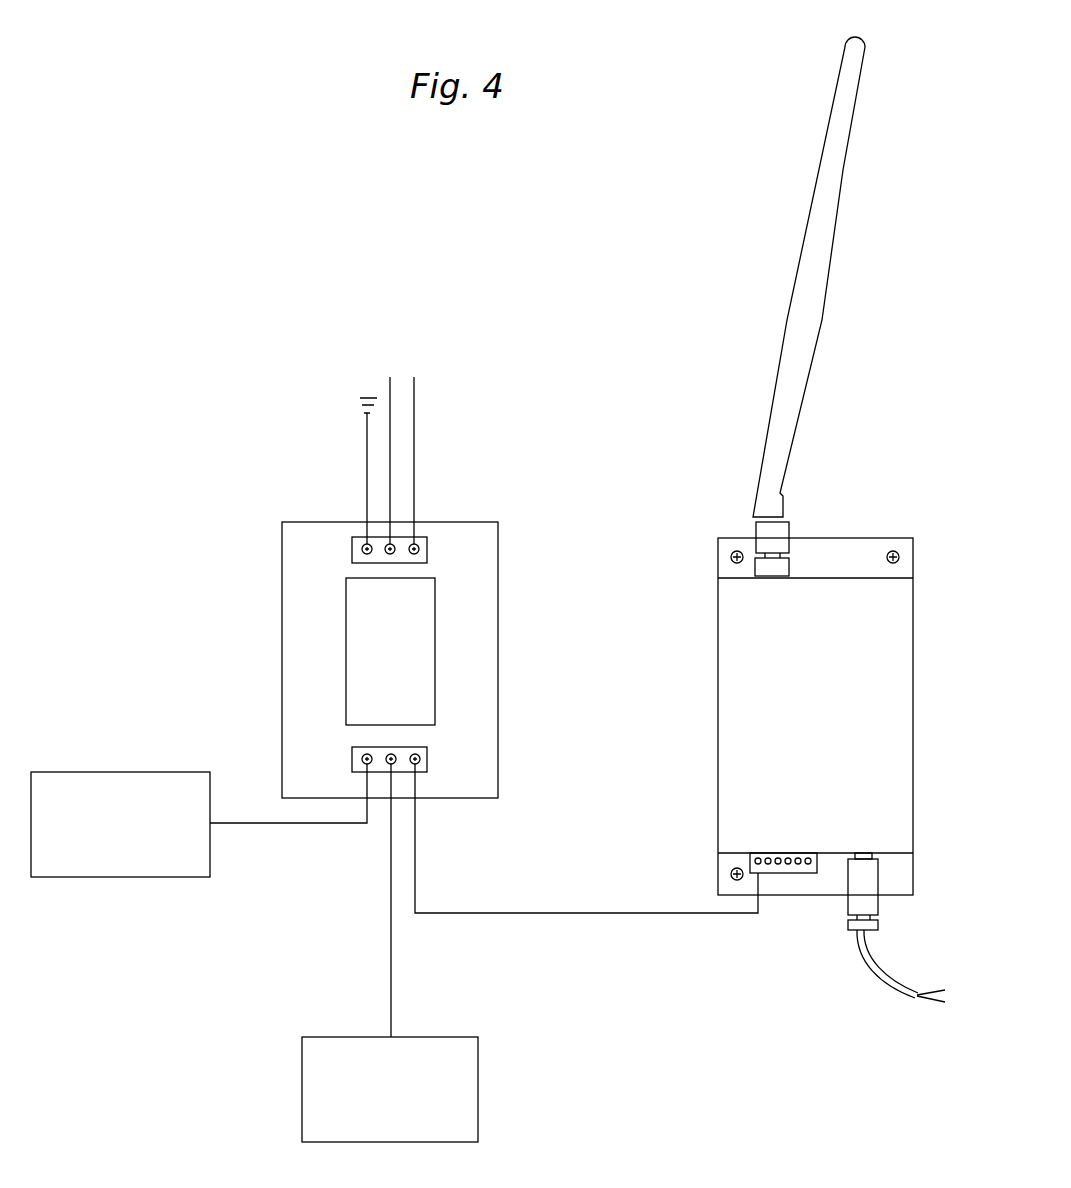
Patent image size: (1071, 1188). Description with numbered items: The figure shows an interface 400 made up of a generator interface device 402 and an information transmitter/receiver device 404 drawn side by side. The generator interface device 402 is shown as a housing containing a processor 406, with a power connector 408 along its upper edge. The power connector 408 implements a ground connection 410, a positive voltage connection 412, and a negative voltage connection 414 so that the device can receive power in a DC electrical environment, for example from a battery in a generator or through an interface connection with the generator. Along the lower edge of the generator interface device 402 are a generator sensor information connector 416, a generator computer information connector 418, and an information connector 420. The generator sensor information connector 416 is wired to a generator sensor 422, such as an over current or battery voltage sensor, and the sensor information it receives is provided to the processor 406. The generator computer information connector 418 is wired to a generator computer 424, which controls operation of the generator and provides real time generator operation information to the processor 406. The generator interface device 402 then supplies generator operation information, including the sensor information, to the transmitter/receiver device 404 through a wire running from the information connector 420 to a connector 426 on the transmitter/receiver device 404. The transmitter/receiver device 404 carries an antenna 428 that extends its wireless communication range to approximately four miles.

The interface 400 is at (628, 139).
The generator interface device 402 is at (285, 556).
The information transmitter/receiver device 404 is at (835, 538).
The processor 406 is at (428, 640).
The power connector 408 is at (428, 549).
The ground connection 410 is at (362, 395).
The positive voltage connection 412 is at (390, 350).
The negative voltage connection 414 is at (418, 350).
The generator sensor information connector 416 is at (365, 755).
The generator computer information connector 418 is at (393, 754).
The information connector 420 is at (420, 757).
The generator sensor 422 is at (82, 772).
The generator computer 424 is at (305, 1053).
The connector 426 is at (792, 873).
The antenna 428 is at (820, 247).